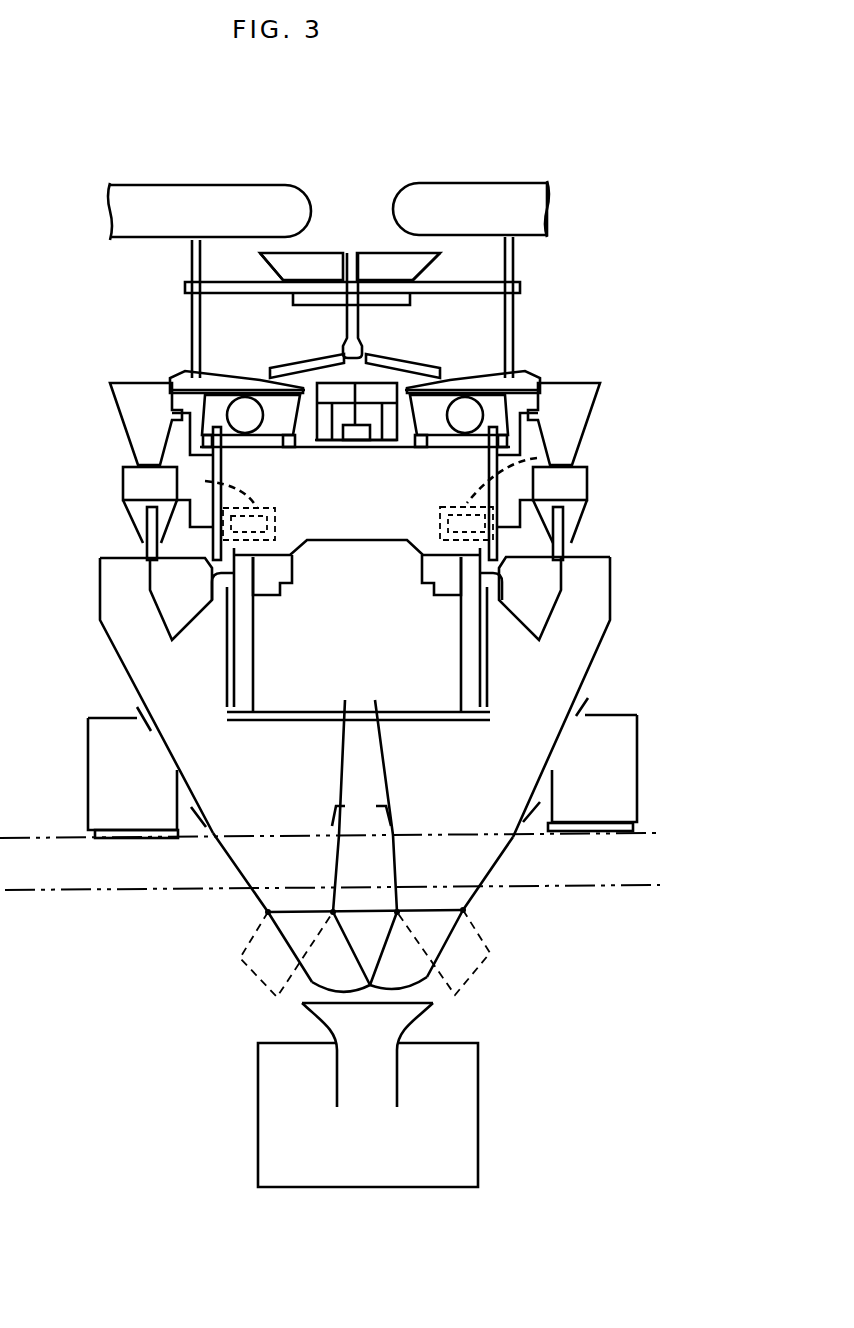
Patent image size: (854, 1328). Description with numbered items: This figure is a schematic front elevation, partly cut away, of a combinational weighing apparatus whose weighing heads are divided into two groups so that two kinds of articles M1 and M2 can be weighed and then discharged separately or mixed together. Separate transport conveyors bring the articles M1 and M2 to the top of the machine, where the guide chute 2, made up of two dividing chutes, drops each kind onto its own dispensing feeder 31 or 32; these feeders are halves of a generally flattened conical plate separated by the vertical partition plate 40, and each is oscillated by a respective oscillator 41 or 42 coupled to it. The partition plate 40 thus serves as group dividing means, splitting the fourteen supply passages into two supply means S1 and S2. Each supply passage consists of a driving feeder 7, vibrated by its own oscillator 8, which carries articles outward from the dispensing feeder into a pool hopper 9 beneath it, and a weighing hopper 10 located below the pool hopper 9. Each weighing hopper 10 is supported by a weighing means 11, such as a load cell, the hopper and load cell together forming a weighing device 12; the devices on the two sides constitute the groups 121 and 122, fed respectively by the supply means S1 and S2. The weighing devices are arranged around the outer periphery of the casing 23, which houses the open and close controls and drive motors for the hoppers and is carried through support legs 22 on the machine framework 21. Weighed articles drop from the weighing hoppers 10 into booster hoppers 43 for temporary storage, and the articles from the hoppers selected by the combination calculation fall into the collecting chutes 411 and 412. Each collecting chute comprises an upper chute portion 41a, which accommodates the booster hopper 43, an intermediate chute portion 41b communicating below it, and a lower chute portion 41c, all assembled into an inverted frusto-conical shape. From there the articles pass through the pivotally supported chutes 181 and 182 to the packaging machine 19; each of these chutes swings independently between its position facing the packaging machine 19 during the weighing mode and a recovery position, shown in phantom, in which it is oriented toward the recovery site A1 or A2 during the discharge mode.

The weighing means 11 is at (188, 185).
The weighing device 12 is at (475, 182).
The guide chute 2 is at (348, 243).
The machine framework 21 is at (276, 278).
The support legs 22 is at (436, 266).
The articles to be weighed M1 is at (320, 240).
The articles to be weighed M2 is at (378, 240).
The vertical partition plate 40 is at (362, 318).
The dispensing feeder 31 is at (305, 367).
The dispensing feeder 32 is at (383, 367).
The oscillator 41 is at (330, 390).
The oscillator 42 is at (438, 374).
The supply means S1 is at (119, 309).
The supply means S2 is at (598, 307).
The driving feeder 7 is at (173, 373).
The oscillator 8 is at (275, 415).
The pool hopper 9 is at (132, 393).
The weighing hopper 10 is at (124, 480).
The group of weighing devices 121 is at (141, 520).
The group of weighing devices 122 is at (577, 507).
The casing 23 is at (352, 516).
The booster hopper 43 is at (182, 607).
The upper chute portion 41a is at (128, 675).
The intermediate chute portion 41b is at (163, 747).
The lower chute portion 41c is at (222, 847).
The collecting chute 411 is at (168, 770).
The collecting chute 412 is at (567, 748).
The pivotally supported chute 181 is at (320, 973).
The pivotally supported chute 182 is at (440, 932).
The recovery site A1 is at (270, 957).
The recovery site A2 is at (460, 955).
The packaging machine 19 is at (465, 1104).